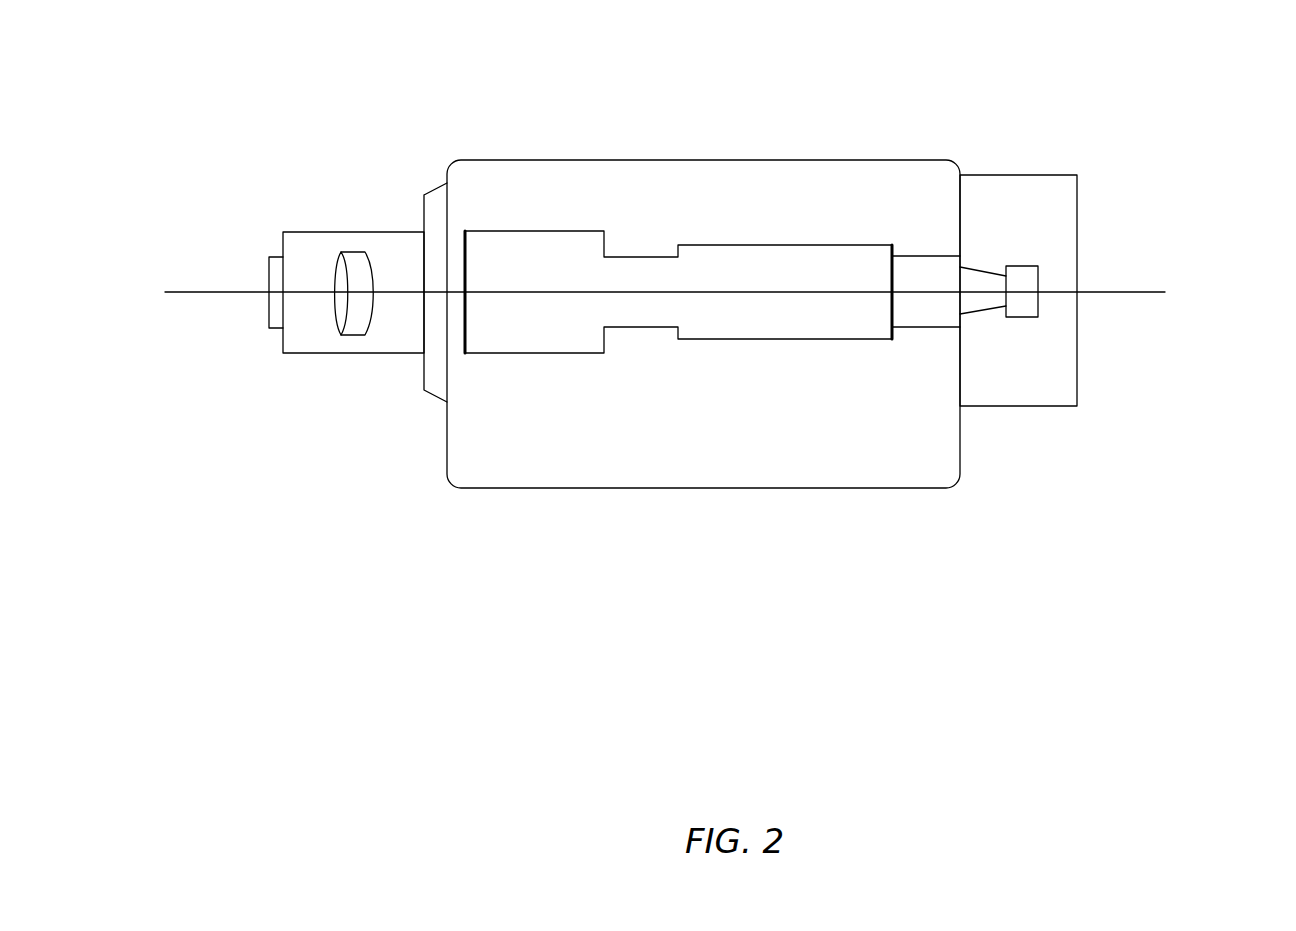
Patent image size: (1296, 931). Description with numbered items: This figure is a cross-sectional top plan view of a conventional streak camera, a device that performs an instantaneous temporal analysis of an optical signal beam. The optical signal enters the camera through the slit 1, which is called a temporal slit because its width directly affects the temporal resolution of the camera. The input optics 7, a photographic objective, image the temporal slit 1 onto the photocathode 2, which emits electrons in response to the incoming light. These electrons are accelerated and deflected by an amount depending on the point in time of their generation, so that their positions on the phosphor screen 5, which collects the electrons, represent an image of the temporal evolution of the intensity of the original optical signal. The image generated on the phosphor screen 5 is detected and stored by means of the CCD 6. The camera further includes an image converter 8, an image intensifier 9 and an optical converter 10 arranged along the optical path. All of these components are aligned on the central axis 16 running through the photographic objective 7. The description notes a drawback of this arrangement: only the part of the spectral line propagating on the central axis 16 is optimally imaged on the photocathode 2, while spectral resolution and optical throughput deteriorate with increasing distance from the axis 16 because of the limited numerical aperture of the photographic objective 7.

The slit 1 is at (270, 328).
The photocathode 2 is at (467, 360).
The phosphor screen 5 is at (892, 345).
The CCD 6 is at (1021, 258).
The input optics 7 is at (360, 229).
The image converter 8 is at (300, 231).
The image intensifier 9 is at (918, 250).
The optical converter 10 is at (982, 319).
The central axis 16 is at (1130, 283).